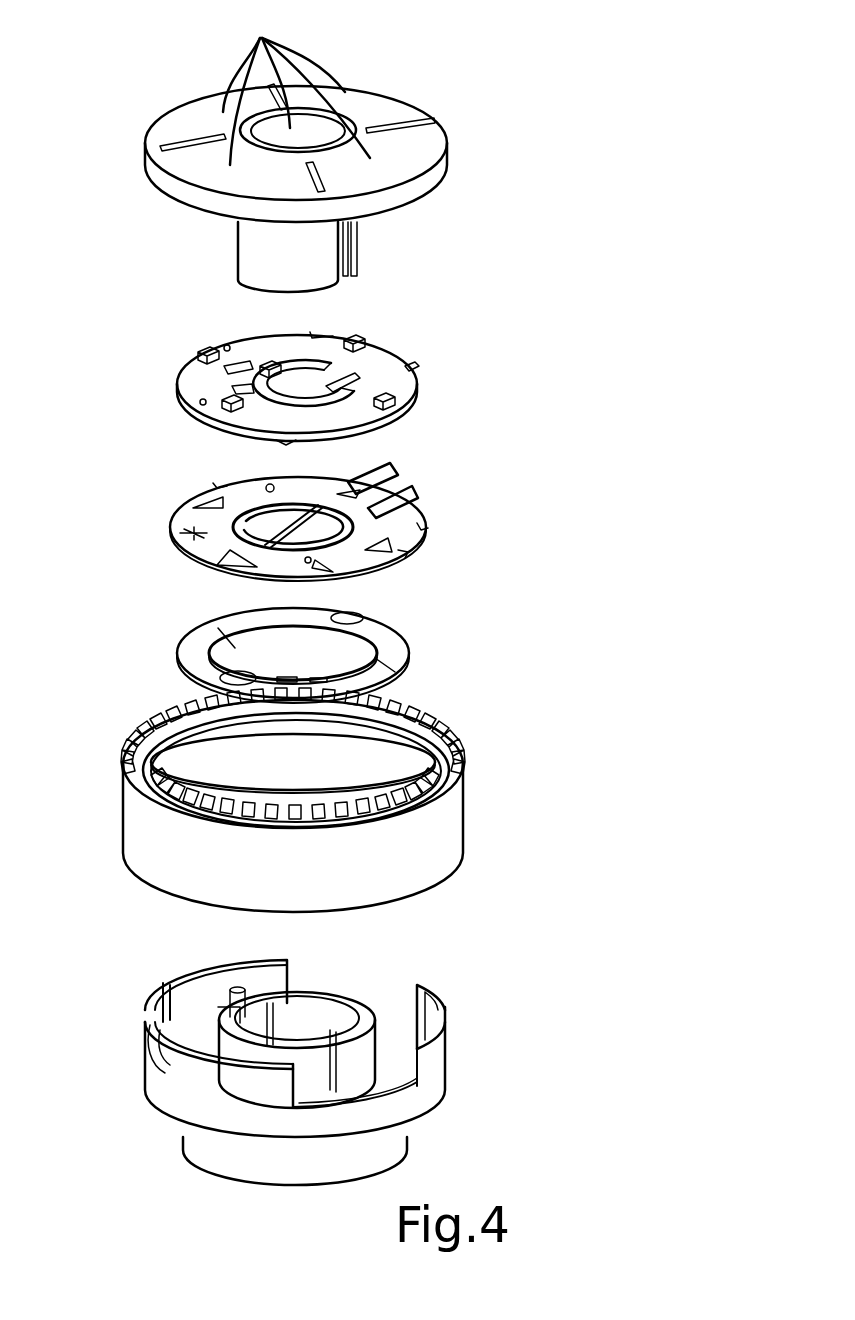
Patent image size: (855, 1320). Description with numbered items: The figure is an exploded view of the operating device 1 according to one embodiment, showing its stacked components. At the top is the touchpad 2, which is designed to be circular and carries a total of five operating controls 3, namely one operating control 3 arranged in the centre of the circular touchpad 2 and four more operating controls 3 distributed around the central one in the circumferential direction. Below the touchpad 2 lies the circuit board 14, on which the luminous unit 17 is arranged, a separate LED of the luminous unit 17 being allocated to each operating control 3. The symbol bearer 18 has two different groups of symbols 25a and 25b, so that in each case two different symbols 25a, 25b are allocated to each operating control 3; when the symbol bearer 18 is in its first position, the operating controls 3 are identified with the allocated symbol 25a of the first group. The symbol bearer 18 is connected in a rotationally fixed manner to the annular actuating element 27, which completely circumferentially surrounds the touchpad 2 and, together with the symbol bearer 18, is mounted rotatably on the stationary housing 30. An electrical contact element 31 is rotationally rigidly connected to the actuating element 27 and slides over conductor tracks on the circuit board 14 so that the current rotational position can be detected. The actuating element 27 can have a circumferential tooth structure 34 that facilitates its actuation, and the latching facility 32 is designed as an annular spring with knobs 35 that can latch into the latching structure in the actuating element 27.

The operating device 1 is at (94, 108).
The touchpad 2 is at (410, 100).
The operating controls 3 is at (296, 84).
The circuit board 14 is at (190, 376).
The luminous unit 17 is at (268, 364).
The symbol bearer 18 is at (425, 530).
The symbols of the first group 25a is at (192, 560).
The symbols of the second group 25b is at (183, 520).
The actuating element 27 is at (122, 800).
The housing 30 is at (450, 1010).
The electrical contact element 31 is at (405, 488).
The latching facility 32 is at (200, 640).
The circumferential tooth structure 34 is at (465, 745).
The knobs 35 is at (332, 630).